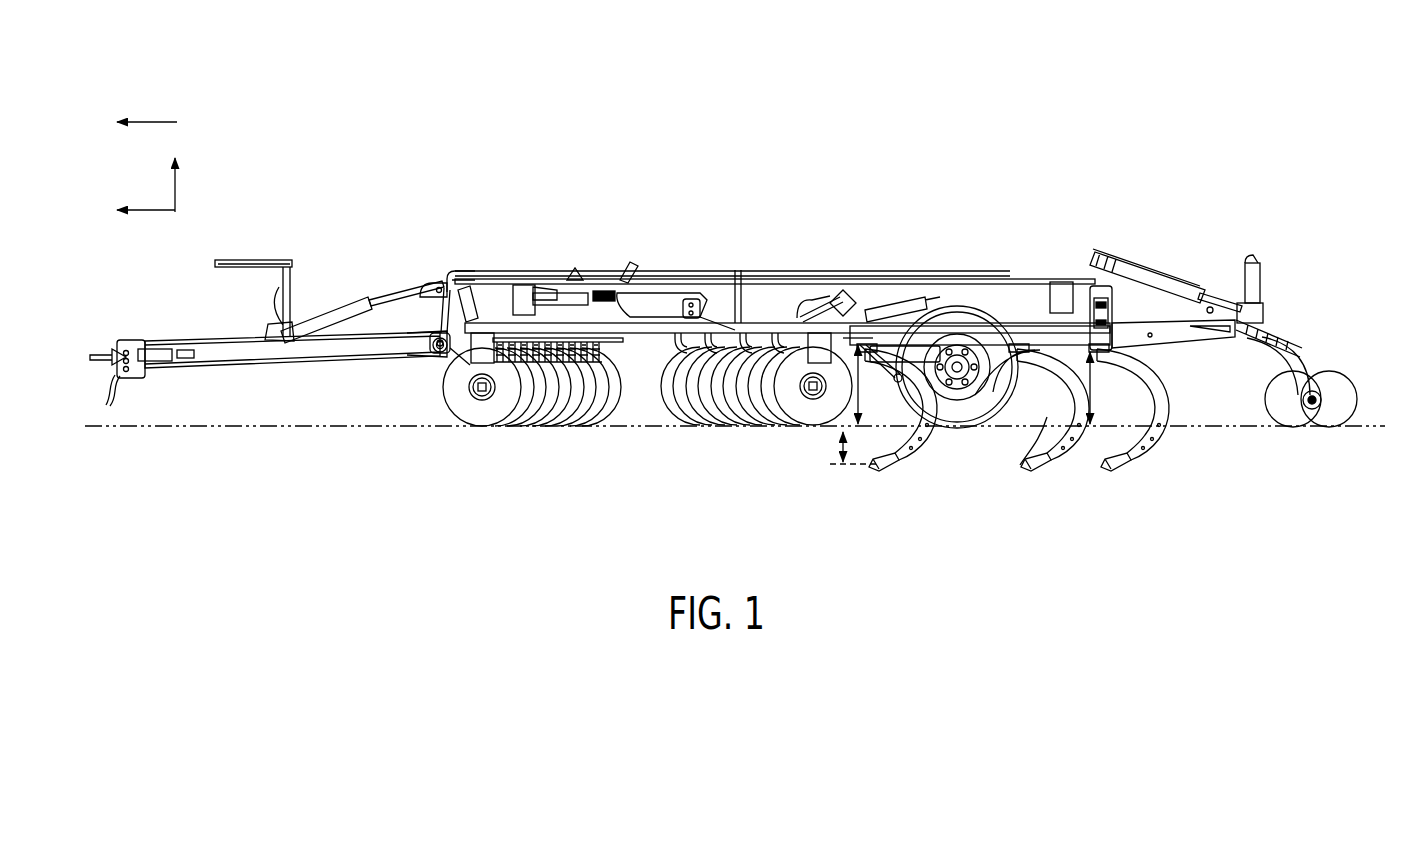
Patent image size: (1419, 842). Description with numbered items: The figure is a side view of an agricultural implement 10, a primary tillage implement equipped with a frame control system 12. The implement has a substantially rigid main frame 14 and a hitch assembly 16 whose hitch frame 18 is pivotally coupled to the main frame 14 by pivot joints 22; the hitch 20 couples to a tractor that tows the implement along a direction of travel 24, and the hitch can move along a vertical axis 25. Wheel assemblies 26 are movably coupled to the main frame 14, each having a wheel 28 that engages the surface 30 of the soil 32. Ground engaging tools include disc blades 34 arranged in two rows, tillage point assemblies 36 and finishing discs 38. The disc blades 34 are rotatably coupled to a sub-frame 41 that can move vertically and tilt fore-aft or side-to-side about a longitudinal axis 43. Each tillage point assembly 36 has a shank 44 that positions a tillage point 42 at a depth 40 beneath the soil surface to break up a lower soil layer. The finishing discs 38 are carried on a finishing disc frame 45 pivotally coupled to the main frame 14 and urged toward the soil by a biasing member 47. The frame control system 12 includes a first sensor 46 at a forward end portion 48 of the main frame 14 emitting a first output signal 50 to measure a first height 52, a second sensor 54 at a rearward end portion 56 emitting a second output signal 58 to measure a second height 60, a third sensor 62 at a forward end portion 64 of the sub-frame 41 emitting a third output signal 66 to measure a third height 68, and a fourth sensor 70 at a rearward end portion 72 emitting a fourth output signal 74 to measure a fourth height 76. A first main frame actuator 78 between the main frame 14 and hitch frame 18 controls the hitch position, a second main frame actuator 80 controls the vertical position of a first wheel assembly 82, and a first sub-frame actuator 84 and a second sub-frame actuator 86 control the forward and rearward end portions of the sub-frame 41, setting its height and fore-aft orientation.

The agricultural implement 10 is at (405, 172).
The frame control system 12 is at (297, 243).
The main frame 14 is at (767, 290).
The hitch assembly 16 is at (170, 300).
The hitch frame 18 is at (237, 350).
The hitch 20 is at (100, 352).
The pivot joint 22 is at (440, 350).
The direction of travel 24 is at (157, 121).
The vertical axis 25 is at (177, 203).
The wheel assembly 26 is at (958, 265).
The wheel 28 is at (972, 312).
The surface 30 is at (187, 425).
The soil 32 is at (306, 478).
The disc blade 34 is at (523, 452).
The tillage point assembly 36 is at (1027, 480).
The finishing disc 38 is at (1340, 440).
The depth 40 is at (843, 449).
The sub-frame 41 is at (708, 312).
The tillage point 42 is at (893, 470).
The longitudinal axis 43 is at (160, 210).
The shank 44 is at (935, 440).
The finishing disc frame 45 is at (1185, 337).
The first sensor 46 is at (518, 285).
The biasing member 47 is at (1148, 282).
The forward end portion 48 is at (443, 243).
The first output signal 50 is at (552, 428).
The first height 52 is at (603, 424).
The second sensor 54 is at (1060, 283).
The rearward end portion 56 is at (1107, 238).
The second output signal 58 is at (1007, 440).
The second height 60 is at (1162, 400).
The third sensor 62 is at (486, 303).
The forward end portion 64 is at (430, 313).
The third output signal 66 is at (450, 413).
The third height 68 is at (447, 387).
The fourth sensor 70 is at (838, 330).
The rearward end portion 72 is at (838, 293).
The fourth output signal 74 is at (823, 428).
The fourth height 76 is at (872, 380).
The first main frame actuator 78 is at (330, 308).
The second main frame actuator 80 is at (887, 350).
The first wheel assembly 82 is at (955, 312).
The first sub-frame actuator 84 is at (427, 297).
The second sub-frame actuator 86 is at (818, 315).